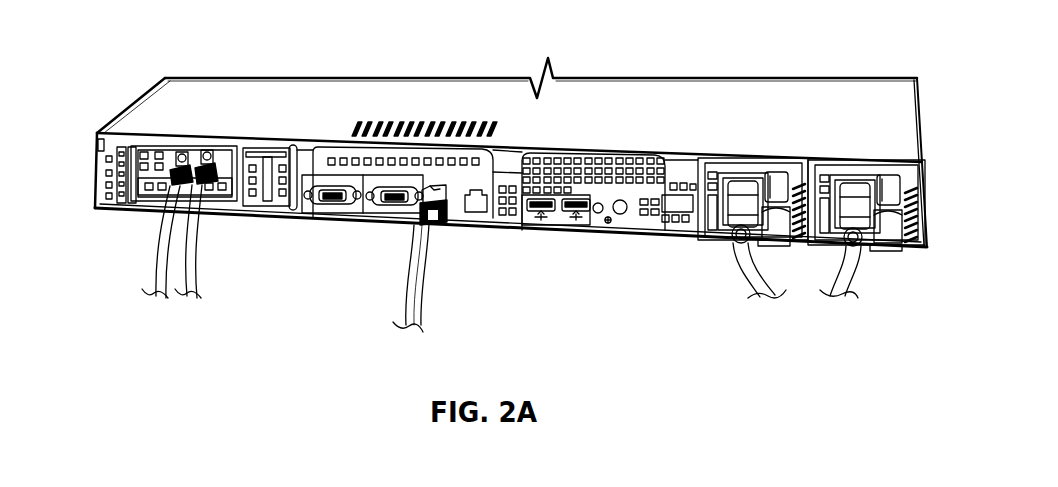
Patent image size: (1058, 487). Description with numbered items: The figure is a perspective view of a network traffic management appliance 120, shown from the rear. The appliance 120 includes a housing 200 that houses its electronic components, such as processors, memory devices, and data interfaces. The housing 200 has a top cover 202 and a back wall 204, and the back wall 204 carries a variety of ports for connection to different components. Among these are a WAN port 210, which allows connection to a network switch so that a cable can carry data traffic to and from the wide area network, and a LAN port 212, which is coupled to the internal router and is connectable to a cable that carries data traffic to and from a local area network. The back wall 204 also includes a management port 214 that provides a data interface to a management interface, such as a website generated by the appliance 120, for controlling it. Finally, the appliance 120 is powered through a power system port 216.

The network traffic management appliance 120 is at (352, 46).
The housing 200 is at (130, 110).
The top cover 202 is at (98, 177).
The back wall 204 is at (823, 103).
The WAN port 210 is at (182, 150).
The LAN port 212 is at (222, 150).
The management port 214 is at (449, 216).
The power system port 216 is at (723, 237).